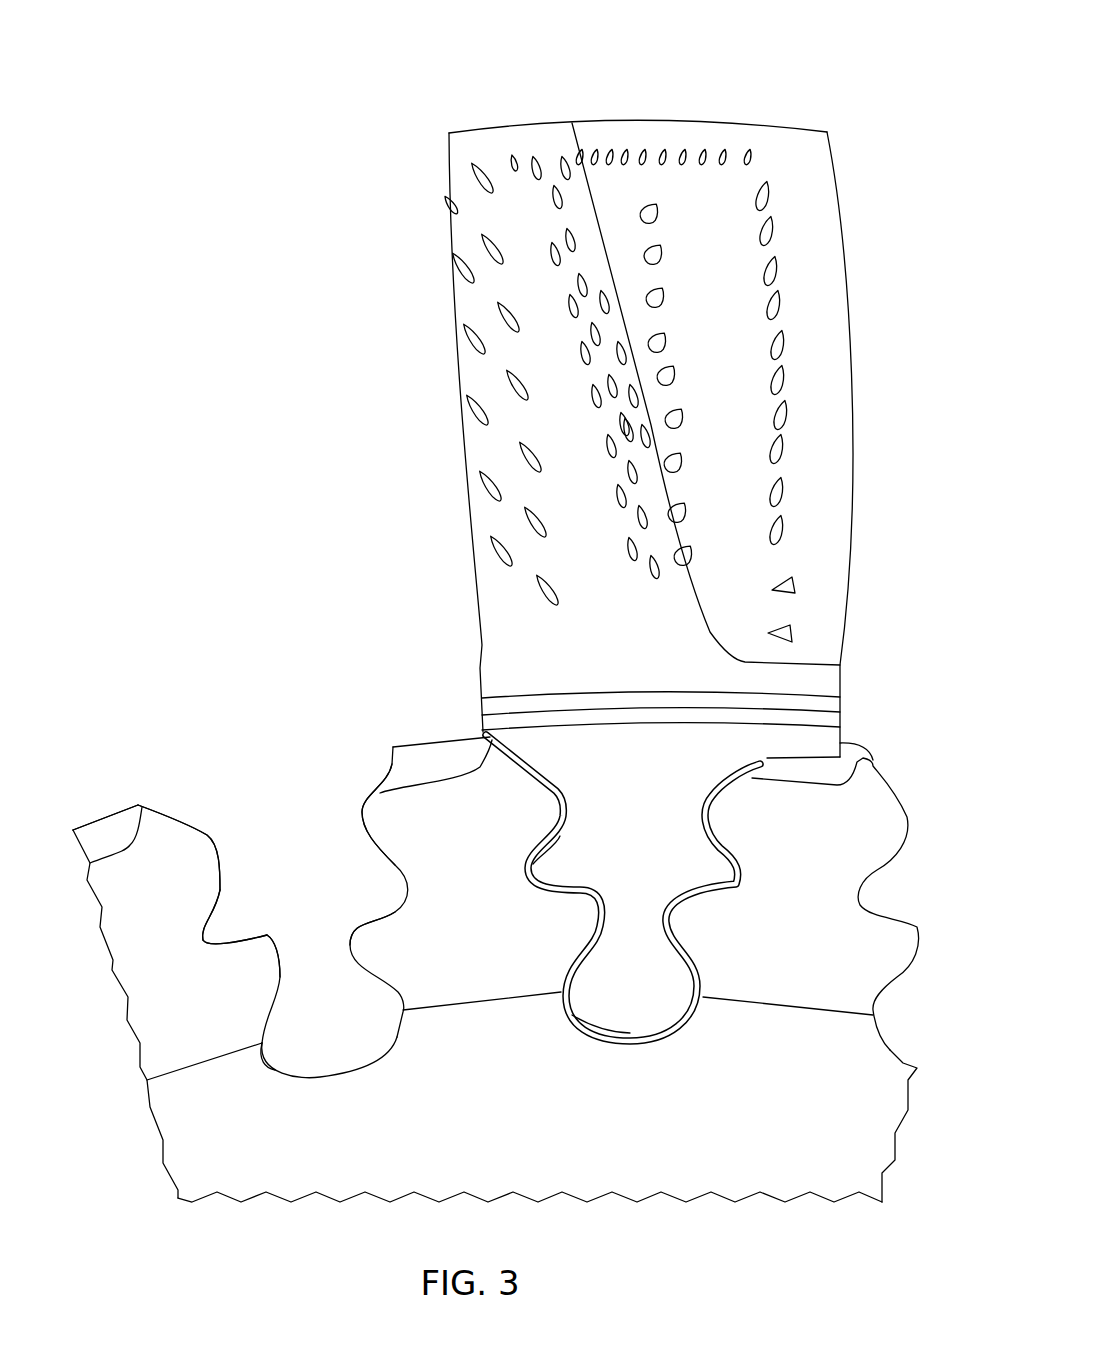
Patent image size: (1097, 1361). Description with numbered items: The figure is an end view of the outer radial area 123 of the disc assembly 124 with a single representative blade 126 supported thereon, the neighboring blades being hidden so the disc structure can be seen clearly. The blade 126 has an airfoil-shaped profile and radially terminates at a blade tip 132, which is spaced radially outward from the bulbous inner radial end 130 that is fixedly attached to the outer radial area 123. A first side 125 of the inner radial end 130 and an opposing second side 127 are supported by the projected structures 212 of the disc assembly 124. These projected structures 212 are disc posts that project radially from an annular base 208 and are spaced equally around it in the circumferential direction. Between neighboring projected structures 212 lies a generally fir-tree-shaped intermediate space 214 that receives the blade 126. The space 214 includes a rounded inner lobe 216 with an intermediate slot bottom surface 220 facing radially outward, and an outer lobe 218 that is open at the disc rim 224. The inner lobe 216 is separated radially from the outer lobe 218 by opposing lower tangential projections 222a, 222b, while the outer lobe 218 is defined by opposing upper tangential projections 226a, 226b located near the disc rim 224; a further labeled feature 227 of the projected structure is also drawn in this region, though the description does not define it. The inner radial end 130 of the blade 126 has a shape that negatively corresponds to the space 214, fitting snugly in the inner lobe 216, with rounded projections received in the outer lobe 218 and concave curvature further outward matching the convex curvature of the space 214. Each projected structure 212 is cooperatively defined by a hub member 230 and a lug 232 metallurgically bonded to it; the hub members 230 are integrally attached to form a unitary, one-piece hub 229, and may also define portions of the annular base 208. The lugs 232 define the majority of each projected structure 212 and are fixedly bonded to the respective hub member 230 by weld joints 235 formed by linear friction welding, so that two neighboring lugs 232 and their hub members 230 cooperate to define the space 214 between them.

The blade 126 is at (752, 113).
The blade tip 132 is at (632, 120).
The outer radial area 123 is at (428, 808).
The first side 125 is at (538, 845).
The second side 127 is at (727, 847).
The inner radial end 130 is at (660, 933).
The disc assembly 124 is at (75, 875).
The disc rim 224 is at (100, 805).
The intermediate space 214 is at (280, 815).
The upper tangential projection 226a is at (213, 842).
The upper tangential projection 226b is at (363, 802).
The lower tangential projection 222a is at (277, 943).
The lower tangential projection 222b is at (348, 925).
The outer lobe 218 is at (218, 938).
The lower lobe 227 is at (283, 988).
The intermediate slot bottom surface 220 is at (340, 1073).
The inner lobe 216 is at (257, 1050).
The weld joint 235 is at (193, 1063).
The projected structure 212 is at (510, 1005).
The hub member 230 is at (462, 1078).
The annular base 208 is at (883, 1167).
The hub 229 is at (680, 1158).
The lug 232 is at (517, 820).